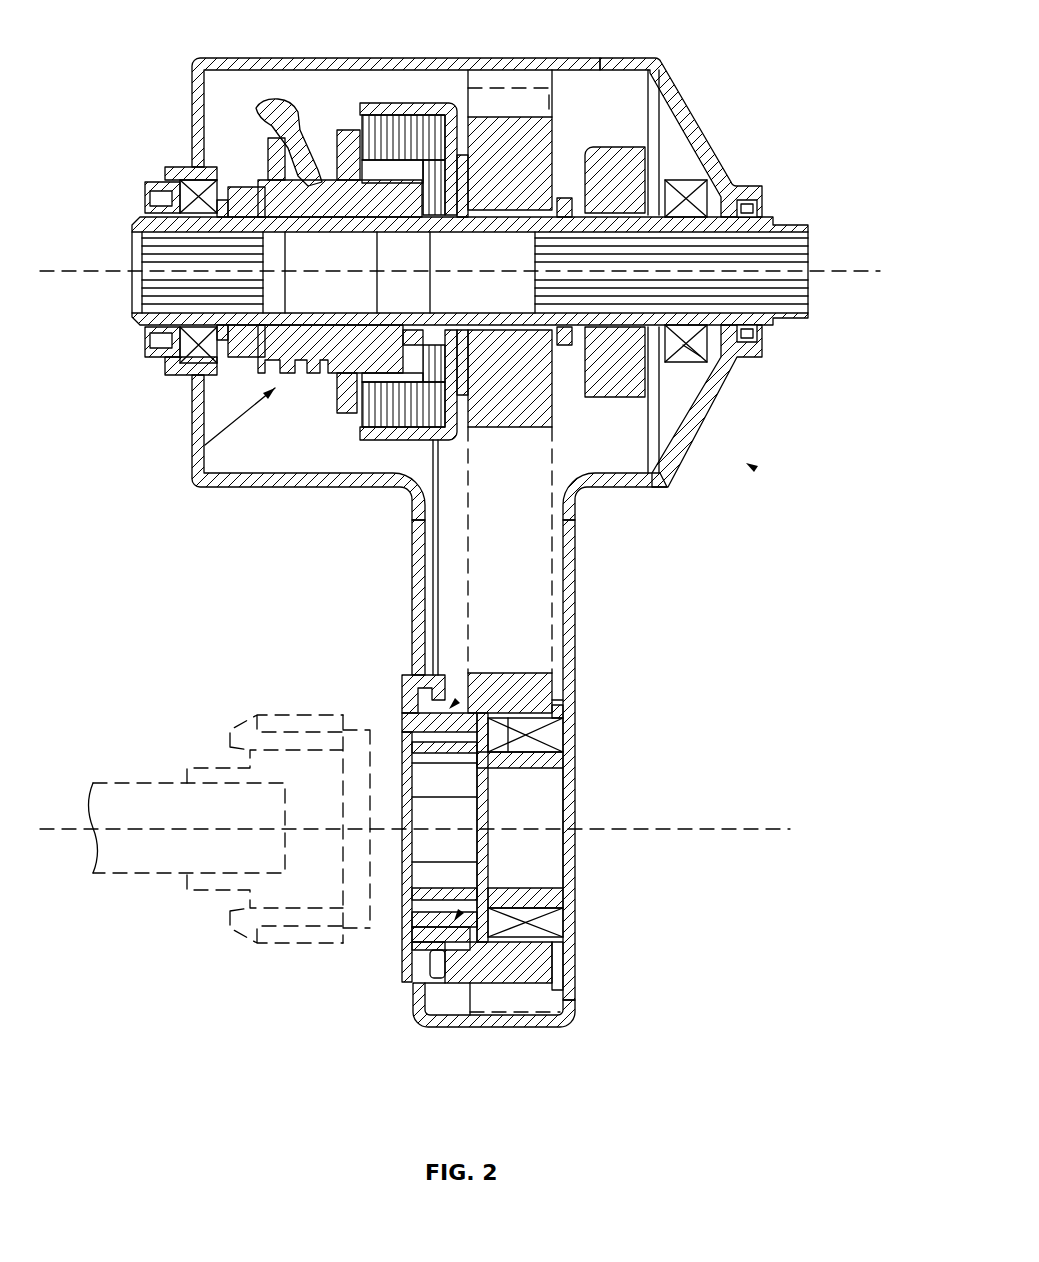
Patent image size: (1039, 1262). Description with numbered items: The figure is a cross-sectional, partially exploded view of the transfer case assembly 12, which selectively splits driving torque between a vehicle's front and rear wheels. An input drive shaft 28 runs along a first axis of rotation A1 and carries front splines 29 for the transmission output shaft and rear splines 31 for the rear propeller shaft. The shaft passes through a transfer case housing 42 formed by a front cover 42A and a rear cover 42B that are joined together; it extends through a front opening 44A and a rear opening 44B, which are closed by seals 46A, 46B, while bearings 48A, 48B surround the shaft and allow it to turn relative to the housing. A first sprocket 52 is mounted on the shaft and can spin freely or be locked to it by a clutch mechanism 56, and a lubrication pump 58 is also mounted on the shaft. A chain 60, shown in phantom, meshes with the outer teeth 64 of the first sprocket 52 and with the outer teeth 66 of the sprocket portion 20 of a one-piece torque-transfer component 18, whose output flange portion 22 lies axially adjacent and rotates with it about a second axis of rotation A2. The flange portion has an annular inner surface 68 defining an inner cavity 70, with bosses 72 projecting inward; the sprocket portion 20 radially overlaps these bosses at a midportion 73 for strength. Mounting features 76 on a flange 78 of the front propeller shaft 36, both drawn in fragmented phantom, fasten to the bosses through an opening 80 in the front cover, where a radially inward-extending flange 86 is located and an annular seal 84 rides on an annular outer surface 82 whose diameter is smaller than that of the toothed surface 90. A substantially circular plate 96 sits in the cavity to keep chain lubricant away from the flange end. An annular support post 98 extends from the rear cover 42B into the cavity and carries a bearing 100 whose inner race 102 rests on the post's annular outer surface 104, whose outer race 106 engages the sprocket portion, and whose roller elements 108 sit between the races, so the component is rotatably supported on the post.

The transfer case assembly 12 is at (748, 465).
The one-piece torque-transfer component 18 is at (553, 955).
The sprocket portion 20 is at (562, 708).
The output flange portion 22 is at (430, 938).
The input drive shaft 28 is at (145, 324).
The front splines 29 is at (143, 240).
The rear splines 31 is at (798, 274).
The front propeller shaft 36 is at (168, 877).
The transfer case housing 42 is at (452, 274).
The front cover 42A is at (252, 58).
The rear cover 42B is at (612, 60).
The front opening 44A is at (145, 357).
The rear opening 44B is at (765, 350).
The seal 46A is at (145, 196).
The seal 46B is at (765, 207).
The bearing 48A is at (198, 365).
The bearing 48B is at (683, 360).
The first sprocket 52 is at (548, 165).
The clutch mechanism 56 is at (205, 445).
The lubrication pump 58 is at (637, 382).
The chain 60 is at (545, 70).
The outer teeth 64 is at (515, 117).
The outer teeth 66 is at (578, 1030).
The annular inner surface 68 is at (456, 918).
The inner cavity 70 is at (552, 832).
The bosses 72 is at (418, 733).
The midportion 73 is at (518, 728).
The mounting features 76 is at (290, 714).
The flange 78 is at (212, 765).
The opening 80 is at (422, 968).
The annular outer surface 82 is at (450, 707).
The annular seal 84 is at (432, 950).
The radially inward-extending flange 86 is at (438, 952).
The toothed surface 90 is at (524, 985).
The substantially circular plate 96 is at (486, 830).
The annular support post 98 is at (572, 788).
The bearing 100 is at (565, 745).
The inner race 102 is at (565, 758).
The annular outer surface 104 is at (512, 673).
The outer race 106 is at (566, 720).
The roller elements 108 is at (553, 924).
The first axis of rotation A1 is at (92, 270).
The second axis of rotation A2 is at (52, 827).